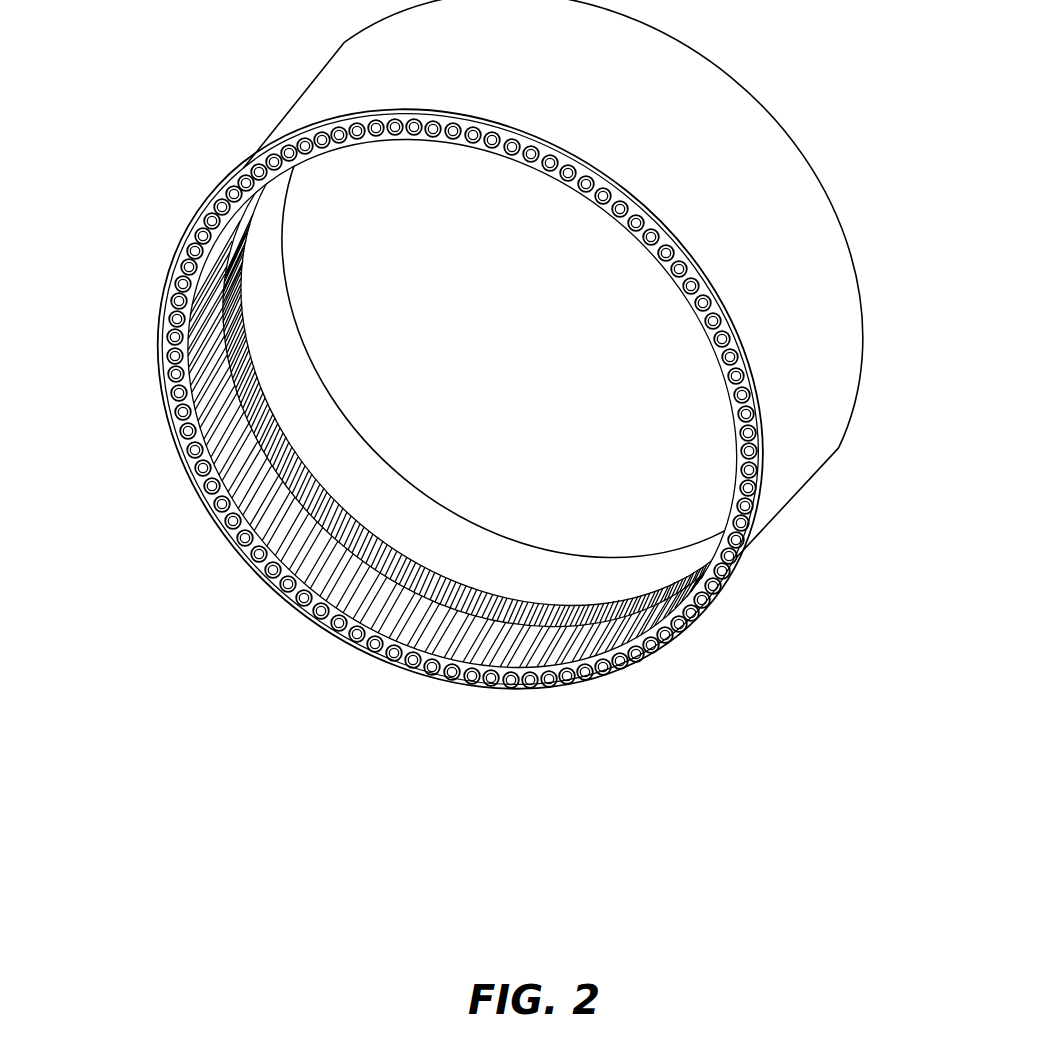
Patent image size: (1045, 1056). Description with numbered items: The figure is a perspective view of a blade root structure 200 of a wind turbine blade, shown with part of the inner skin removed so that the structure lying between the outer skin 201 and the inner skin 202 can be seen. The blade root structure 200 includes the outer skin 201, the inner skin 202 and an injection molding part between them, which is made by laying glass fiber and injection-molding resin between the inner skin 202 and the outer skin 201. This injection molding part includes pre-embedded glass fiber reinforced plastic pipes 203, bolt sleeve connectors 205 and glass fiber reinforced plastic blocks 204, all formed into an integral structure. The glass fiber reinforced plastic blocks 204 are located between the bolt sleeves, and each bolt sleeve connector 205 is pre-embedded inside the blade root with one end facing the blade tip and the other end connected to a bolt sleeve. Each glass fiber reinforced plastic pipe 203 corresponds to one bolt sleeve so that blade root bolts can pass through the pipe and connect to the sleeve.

The blade root structure 200 is at (103, 67).
The outer skin 201 is at (800, 283).
The inner skin 202 is at (302, 400).
The pre-embedded glass fiber reinforced plastic pipe 203 is at (757, 451).
The glass fiber reinforced plastic block 204 is at (283, 598).
The bolt sleeve connector 205 is at (458, 580).